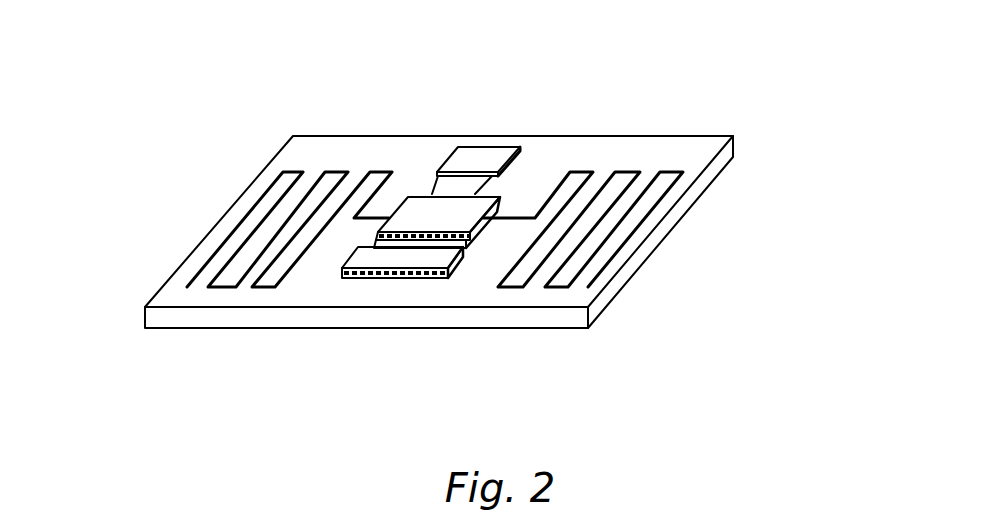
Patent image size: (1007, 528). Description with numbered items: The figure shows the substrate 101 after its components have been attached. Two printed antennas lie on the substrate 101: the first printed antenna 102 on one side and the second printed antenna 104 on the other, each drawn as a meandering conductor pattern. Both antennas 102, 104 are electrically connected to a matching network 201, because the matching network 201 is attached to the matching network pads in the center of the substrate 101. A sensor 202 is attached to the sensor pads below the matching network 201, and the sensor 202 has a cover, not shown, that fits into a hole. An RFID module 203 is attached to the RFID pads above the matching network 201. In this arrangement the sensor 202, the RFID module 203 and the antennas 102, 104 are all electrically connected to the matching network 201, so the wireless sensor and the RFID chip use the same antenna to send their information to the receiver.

The substrate 101 is at (603, 152).
The first printed antenna 102 is at (633, 210).
The second printed antenna 104 is at (237, 220).
The matching network 201 is at (433, 220).
The sensor 202 is at (413, 255).
The RFID module 203 is at (495, 158).